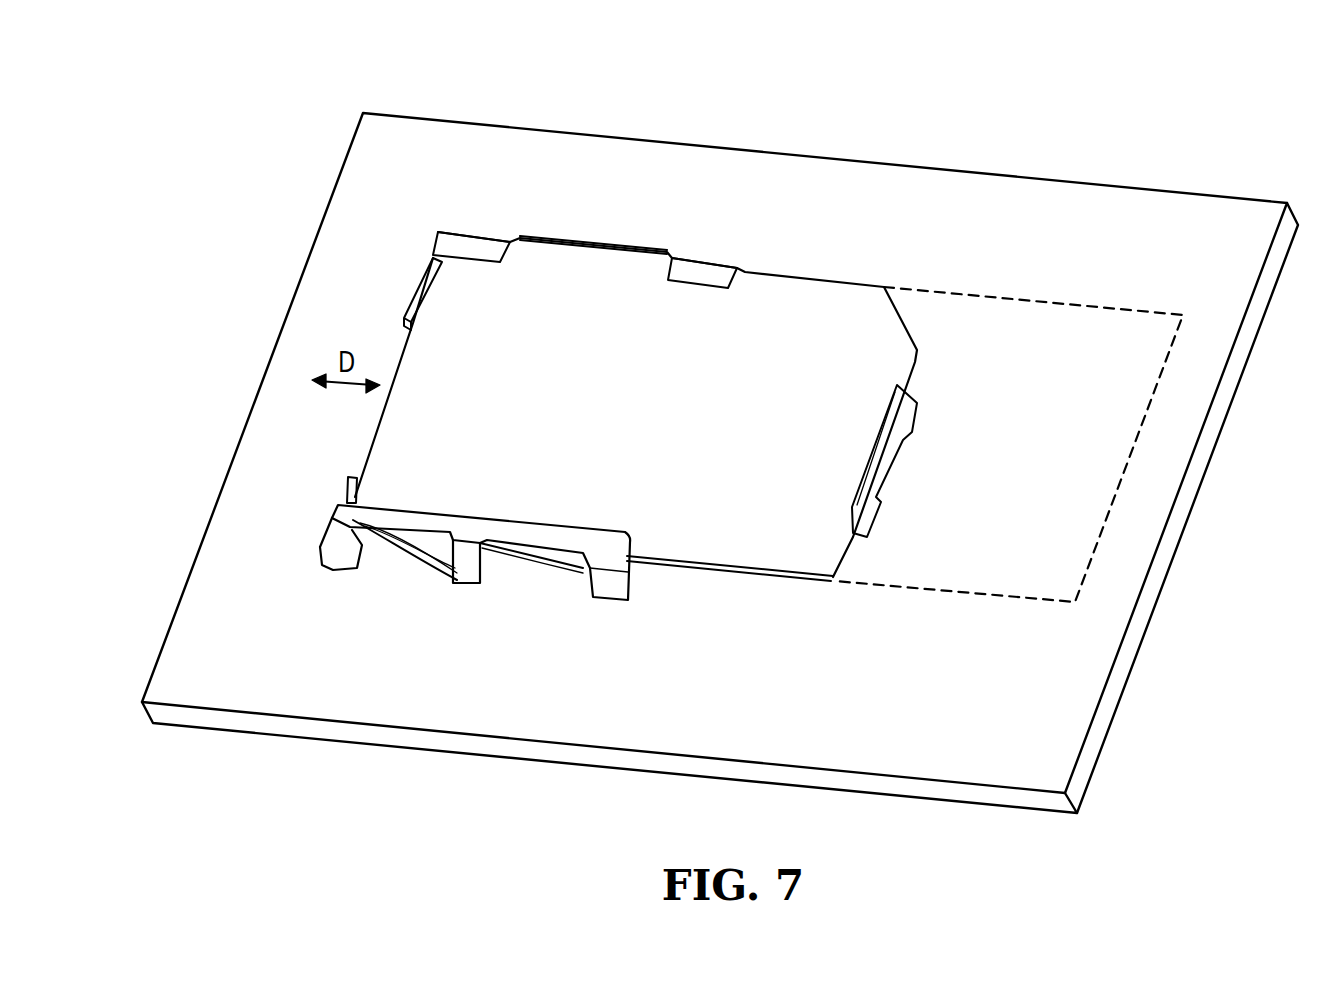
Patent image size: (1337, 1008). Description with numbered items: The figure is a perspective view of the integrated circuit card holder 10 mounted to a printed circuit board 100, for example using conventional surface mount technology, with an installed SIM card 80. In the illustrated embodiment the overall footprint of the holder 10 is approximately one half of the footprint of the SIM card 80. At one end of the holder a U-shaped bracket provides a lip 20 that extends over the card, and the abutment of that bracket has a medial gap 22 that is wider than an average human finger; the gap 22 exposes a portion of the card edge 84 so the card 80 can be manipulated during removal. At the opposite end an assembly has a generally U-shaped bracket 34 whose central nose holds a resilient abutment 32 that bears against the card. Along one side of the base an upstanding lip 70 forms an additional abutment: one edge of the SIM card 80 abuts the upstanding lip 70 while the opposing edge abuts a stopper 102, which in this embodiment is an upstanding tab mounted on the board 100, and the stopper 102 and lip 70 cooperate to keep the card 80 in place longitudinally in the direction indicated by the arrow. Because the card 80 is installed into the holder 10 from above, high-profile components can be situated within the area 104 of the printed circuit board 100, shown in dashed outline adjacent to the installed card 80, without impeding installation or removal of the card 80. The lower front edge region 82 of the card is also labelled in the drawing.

The holder 10 is at (467, 161).
The lip 20 is at (482, 245).
The medial gap 22 is at (594, 243).
The resilient abutment 32 is at (475, 560).
The bracket 34 is at (470, 533).
The upstanding lip 70 is at (432, 273).
The SIM card 80 is at (610, 418).
The front edge 82 is at (720, 568).
The edge 84 is at (647, 260).
The printed circuit board 100 is at (916, 706).
The stopper 102 is at (877, 433).
The area 104 is at (1046, 322).